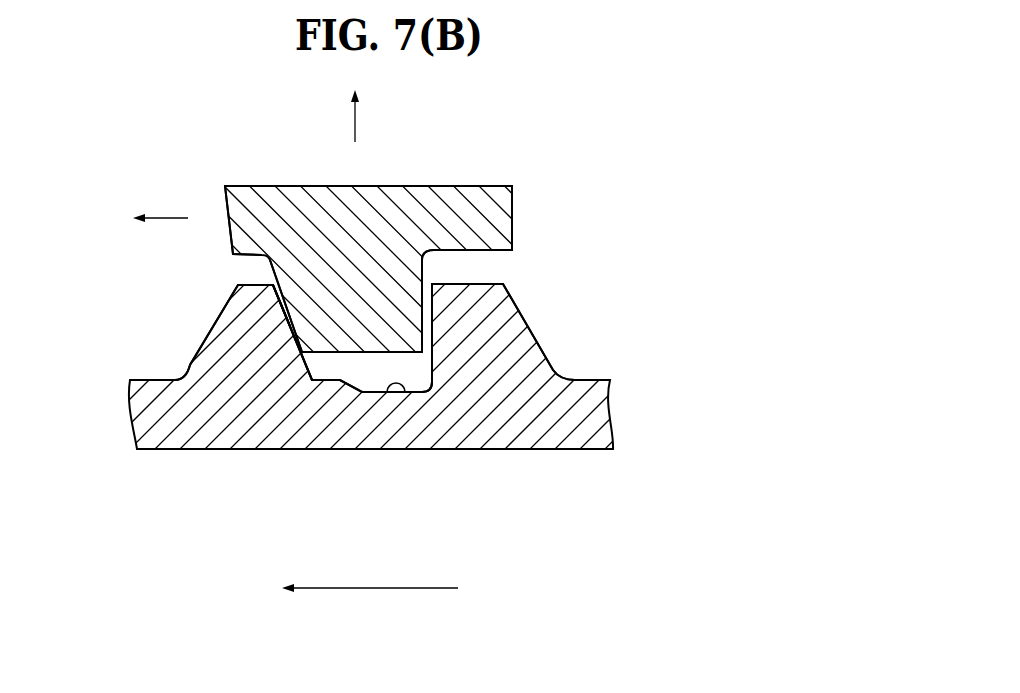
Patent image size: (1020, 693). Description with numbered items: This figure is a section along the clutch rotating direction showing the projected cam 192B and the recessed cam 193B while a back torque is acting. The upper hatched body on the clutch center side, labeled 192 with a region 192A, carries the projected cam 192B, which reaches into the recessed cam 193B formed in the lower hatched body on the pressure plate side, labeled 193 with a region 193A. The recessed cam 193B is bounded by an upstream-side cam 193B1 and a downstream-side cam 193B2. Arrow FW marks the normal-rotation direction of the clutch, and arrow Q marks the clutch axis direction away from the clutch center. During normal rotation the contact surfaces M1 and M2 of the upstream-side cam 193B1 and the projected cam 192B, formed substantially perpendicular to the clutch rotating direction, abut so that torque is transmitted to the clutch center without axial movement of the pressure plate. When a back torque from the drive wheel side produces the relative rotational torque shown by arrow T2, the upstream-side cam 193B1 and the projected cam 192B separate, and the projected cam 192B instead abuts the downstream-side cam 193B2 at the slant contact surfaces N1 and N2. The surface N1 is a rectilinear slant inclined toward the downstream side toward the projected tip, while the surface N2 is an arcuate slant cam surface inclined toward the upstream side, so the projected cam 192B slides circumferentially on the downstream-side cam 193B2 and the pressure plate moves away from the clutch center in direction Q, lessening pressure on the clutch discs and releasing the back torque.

The projection (clutch center side) 192 is at (404, 184).
The flange portion of projection 192A is at (258, 222).
The projected cam 192B is at (345, 293).
The contact surface M2 is at (424, 310).
The recess (pressure plate side) 193 is at (573, 458).
The base portion of recess 193A is at (350, 417).
The recessed cam 193B is at (387, 385).
The upstream-side cam 193B1 is at (477, 343).
The downstream-side cam 193B2 is at (248, 342).
The contact surface N1 is at (300, 372).
The contact surface N2 is at (270, 302).
The contact surface M1 is at (440, 330).
The arrow indicating clutch axis direction Q is at (355, 122).
The arrow indicating relative rotational torque T2 is at (165, 218).
The normal-rotation direction FW is at (378, 588).